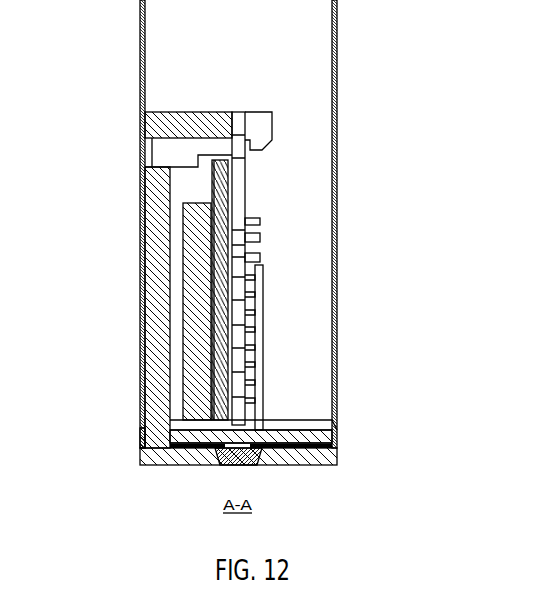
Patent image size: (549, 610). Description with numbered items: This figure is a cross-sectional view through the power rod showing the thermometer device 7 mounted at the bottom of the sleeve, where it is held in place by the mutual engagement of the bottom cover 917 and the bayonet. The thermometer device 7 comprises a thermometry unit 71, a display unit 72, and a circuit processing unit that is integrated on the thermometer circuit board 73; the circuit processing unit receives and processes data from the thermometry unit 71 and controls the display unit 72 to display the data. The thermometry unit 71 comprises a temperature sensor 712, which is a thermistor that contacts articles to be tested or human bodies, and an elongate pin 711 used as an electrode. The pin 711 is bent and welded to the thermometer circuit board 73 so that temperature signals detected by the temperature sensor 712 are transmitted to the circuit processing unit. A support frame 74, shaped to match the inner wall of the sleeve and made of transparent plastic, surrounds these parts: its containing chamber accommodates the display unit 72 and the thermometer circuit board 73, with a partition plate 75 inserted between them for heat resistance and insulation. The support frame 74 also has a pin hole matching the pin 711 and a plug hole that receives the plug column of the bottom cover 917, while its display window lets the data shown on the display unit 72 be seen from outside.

The thermometer device 7 is at (321, 288).
The thermometry unit 71 is at (323, 365).
The pin 711 is at (258, 266).
The temperature sensor 712 is at (258, 445).
The display unit 72 is at (232, 244).
The thermometer circuit board 73 is at (237, 192).
The support frame 74 is at (148, 232).
The partition plate 75 is at (222, 213).
The bottom cover 917 is at (152, 460).